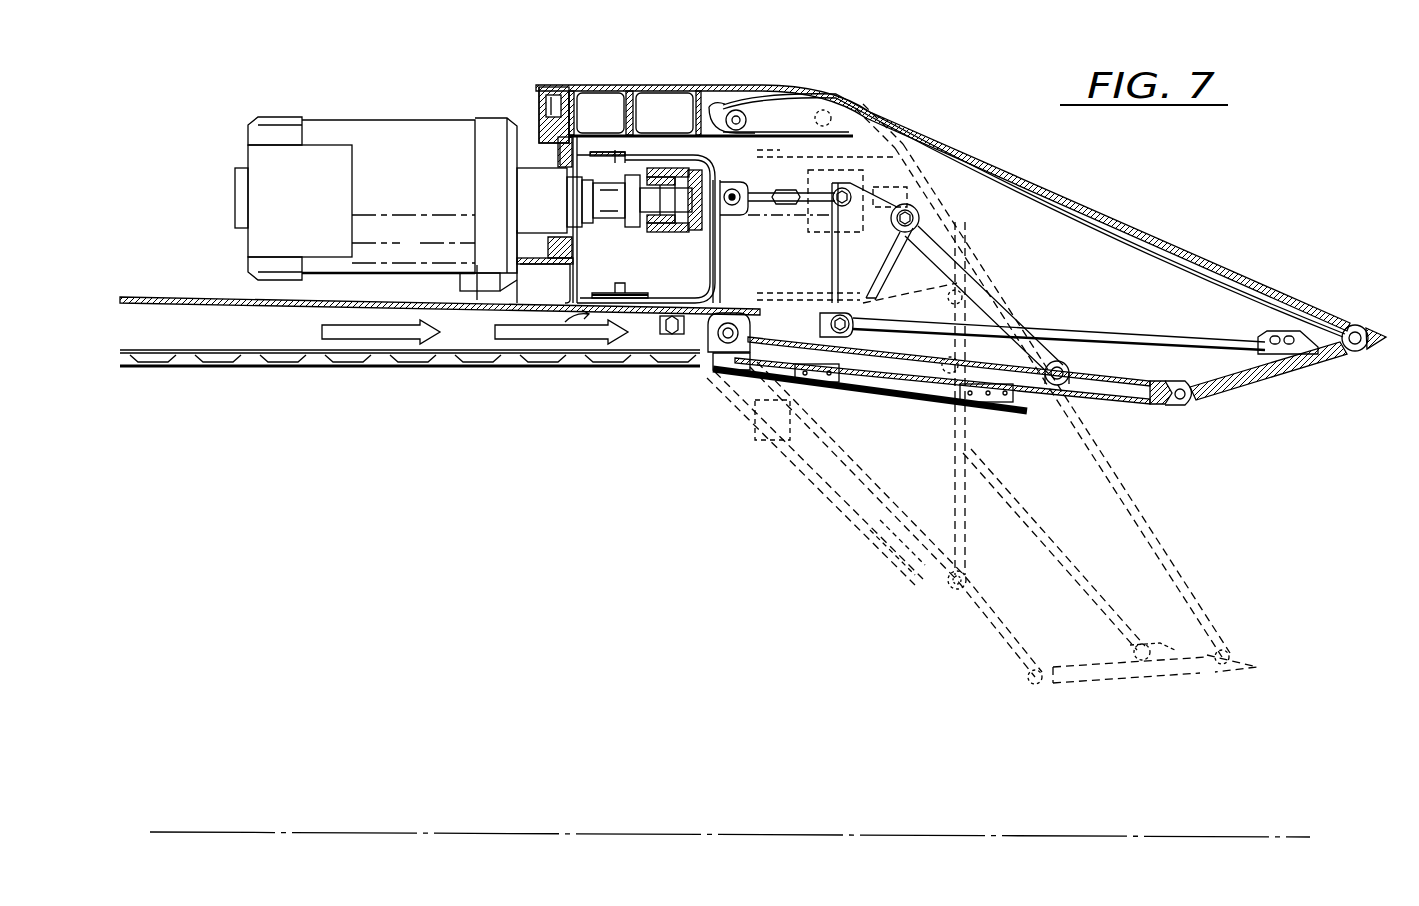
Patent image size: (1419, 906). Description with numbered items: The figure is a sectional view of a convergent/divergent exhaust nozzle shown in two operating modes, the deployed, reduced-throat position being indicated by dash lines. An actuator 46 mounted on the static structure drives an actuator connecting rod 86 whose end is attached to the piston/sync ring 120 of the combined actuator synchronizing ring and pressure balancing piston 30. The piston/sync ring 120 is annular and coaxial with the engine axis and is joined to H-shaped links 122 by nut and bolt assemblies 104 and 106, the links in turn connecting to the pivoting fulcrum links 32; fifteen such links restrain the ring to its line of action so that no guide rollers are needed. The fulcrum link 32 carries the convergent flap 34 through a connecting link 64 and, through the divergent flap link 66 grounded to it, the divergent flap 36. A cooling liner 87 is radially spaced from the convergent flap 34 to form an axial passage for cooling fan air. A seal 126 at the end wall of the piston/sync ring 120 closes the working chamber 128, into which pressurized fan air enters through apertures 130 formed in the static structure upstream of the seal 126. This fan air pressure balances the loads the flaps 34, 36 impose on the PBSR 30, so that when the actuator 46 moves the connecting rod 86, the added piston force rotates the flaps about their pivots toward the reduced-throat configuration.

The combined actuator synchronizing ring and pressure balancing piston (PBSR) 30 is at (658, 325).
The fulcrum link 32 is at (865, 200).
The convergent flap 34 is at (1128, 405).
The divergent flap 36 is at (1250, 385).
The actuator 46 is at (440, 138).
The drive arm 64 is at (1005, 300).
The divergent flap link 66 is at (1090, 330).
The actuator connecting rod 86 is at (622, 230).
The cooling liner 87 is at (897, 403).
The nut and bolt assembly 104 is at (730, 195).
The nut and bolt assembly 106 is at (848, 192).
The piston/sync ring 120 is at (719, 236).
The H-shaped link 122 is at (786, 204).
The seal 126 is at (610, 140).
The working chamber 128 is at (712, 272).
The aperture 130 is at (582, 297).